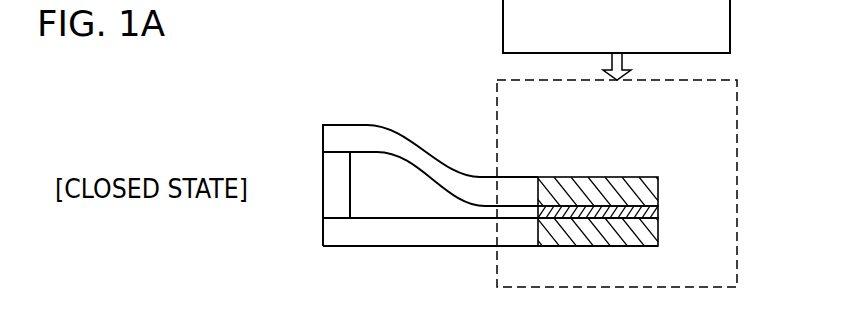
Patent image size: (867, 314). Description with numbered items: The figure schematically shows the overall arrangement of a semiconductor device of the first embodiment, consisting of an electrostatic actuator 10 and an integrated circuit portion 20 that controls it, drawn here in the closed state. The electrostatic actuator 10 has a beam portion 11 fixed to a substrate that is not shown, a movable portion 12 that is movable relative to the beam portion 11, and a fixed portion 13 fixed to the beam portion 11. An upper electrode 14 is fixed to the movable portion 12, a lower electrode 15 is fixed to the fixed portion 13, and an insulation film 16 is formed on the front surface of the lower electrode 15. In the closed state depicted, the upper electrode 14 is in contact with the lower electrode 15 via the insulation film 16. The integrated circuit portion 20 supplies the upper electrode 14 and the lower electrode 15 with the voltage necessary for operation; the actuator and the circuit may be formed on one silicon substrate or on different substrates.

The electrostatic actuator 10 is at (742, 150).
The beam portion 11 is at (322, 197).
The movable portion 12 is at (432, 147).
The fixed portion 13 is at (412, 248).
The upper electrode 14 is at (608, 177).
The lower electrode 15 is at (658, 235).
The insulation film 16 is at (658, 212).
The integrated circuit portion 20 is at (731, 24).